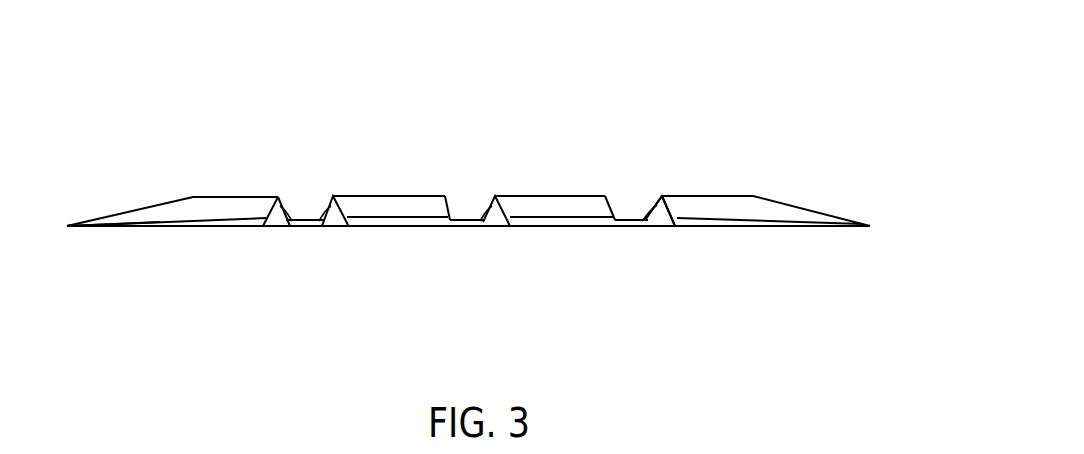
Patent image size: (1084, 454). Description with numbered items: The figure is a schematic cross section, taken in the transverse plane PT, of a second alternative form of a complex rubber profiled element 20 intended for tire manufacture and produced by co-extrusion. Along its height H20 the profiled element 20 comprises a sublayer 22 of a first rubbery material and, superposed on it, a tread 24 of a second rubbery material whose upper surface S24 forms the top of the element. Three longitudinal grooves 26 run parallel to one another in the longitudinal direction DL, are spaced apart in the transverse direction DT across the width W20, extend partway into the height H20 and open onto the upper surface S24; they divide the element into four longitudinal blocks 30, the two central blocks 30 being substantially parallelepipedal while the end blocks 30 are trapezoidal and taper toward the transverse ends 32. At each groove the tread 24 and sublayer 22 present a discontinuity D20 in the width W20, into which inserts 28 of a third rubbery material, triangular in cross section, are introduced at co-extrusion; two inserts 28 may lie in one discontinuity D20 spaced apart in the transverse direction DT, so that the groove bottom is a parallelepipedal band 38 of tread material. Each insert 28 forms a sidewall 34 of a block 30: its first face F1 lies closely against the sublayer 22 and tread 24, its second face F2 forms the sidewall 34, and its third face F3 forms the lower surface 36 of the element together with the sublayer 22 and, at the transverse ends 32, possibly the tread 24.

The complex rubber profiled element 20 is at (776, 154).
The sublayer 22 is at (230, 226).
The tread 24 is at (233, 205).
The longitudinal groove 26 is at (307, 219).
The insert 28 is at (278, 197).
The longitudinal block 30 is at (167, 208).
The transverse end 32 is at (66, 224).
The sidewall 34 is at (278, 228).
The lower surface 36 is at (157, 226).
The band 38 is at (308, 222).
The upper surface of the tread S24 is at (425, 197).
The first face of the insert F1 is at (677, 214).
The second face of the insert F2 is at (657, 197).
The third face of the insert F3 is at (662, 228).
The discontinuity D20 is at (350, 313).
The width of the complex profiled element W20 is at (870, 226).
The height of the complex profiled element H20 is at (753, 196).
The longitudinal direction DL is at (78, 124).
The transverse direction DT is at (100, 115).
The transverse plane PT is at (897, 88).